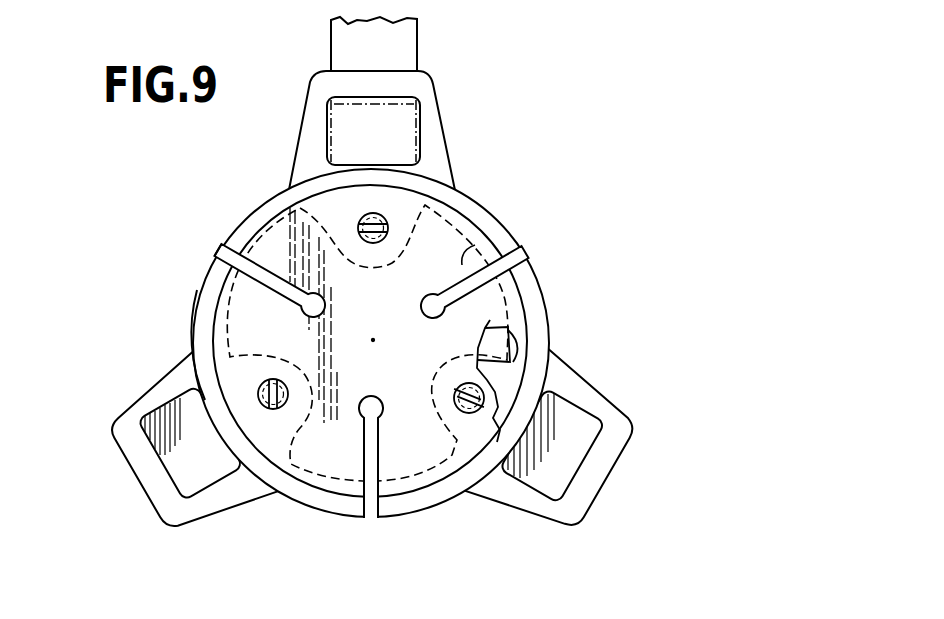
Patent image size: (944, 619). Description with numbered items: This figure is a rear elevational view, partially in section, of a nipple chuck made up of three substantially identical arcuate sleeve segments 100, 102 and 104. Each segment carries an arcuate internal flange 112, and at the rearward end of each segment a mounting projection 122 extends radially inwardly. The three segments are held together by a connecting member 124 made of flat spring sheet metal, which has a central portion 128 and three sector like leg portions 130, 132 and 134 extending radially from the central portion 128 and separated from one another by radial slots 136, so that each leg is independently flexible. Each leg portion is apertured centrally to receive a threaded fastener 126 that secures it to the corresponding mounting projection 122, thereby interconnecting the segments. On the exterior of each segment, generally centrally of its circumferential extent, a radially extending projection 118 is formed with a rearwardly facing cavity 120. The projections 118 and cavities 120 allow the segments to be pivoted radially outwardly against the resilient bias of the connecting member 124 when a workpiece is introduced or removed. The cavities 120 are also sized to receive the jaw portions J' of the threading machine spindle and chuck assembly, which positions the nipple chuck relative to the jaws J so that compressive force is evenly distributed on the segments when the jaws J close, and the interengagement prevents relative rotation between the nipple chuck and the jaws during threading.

The arcuate sleeve segment 100 is at (498, 212).
The arcuate sleeve segment 102 is at (203, 284).
The arcuate sleeve segment 104 is at (543, 282).
The arcuate internal flange 112 is at (260, 262).
The radially extending projection 118 is at (440, 100).
The rearwardly facing cavity 120 is at (338, 106).
The mounting projection 122 is at (432, 196).
The connecting member 124 is at (258, 323).
The threaded fastener 126 is at (372, 243).
The central portion 128 is at (377, 330).
The sector like leg portion 130 is at (475, 245).
The sector like leg portion 132 is at (210, 258).
The sector like leg portion 134 is at (490, 320).
The radial slot 136 is at (292, 290).
The jaw J is at (384, 35).
The jaw portion J' is at (387, 103).